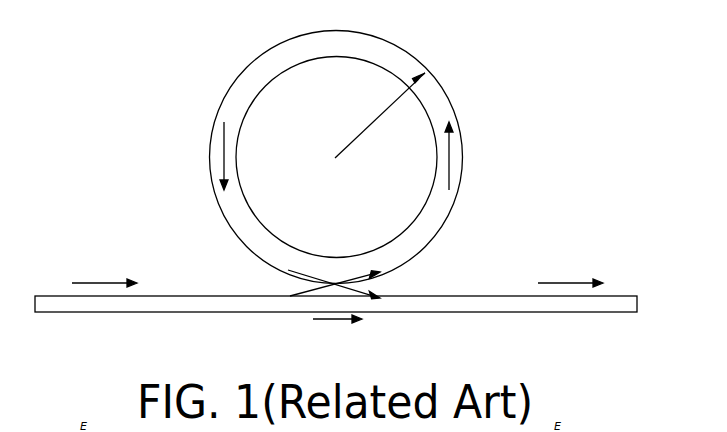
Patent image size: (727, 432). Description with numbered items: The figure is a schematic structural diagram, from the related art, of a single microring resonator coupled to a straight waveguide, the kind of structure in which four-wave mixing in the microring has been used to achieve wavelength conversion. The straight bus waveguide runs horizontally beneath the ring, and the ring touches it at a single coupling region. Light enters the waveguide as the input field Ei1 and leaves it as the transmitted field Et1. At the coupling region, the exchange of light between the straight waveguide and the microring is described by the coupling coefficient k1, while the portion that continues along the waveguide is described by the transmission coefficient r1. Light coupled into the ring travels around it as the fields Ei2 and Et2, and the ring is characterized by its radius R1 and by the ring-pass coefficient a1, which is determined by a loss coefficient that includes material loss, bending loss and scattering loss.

The input field of bus waveguide Ei1 is at (104, 272).
The transmitted field of bus waveguide Et1 is at (570, 272).
The field entering ring resonator Ei2 is at (199, 156).
The field circulating in ring resonator Et2 is at (473, 156).
The ring resonator radius R1 is at (380, 115).
The ring-pass coefficient a1 is at (235, 254).
The coupling coefficient k1 is at (317, 284).
The transmission coefficient r1 is at (337, 332).